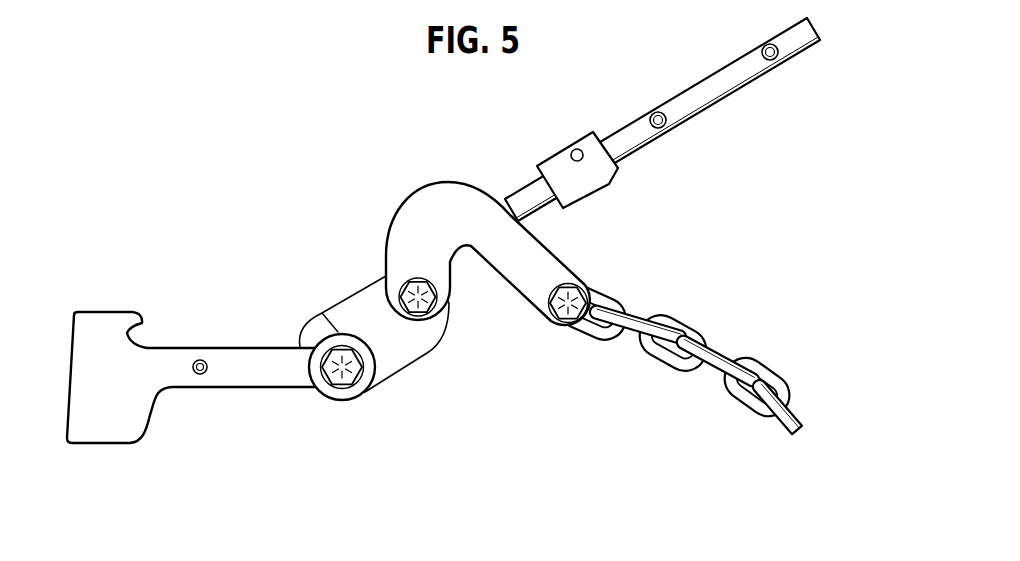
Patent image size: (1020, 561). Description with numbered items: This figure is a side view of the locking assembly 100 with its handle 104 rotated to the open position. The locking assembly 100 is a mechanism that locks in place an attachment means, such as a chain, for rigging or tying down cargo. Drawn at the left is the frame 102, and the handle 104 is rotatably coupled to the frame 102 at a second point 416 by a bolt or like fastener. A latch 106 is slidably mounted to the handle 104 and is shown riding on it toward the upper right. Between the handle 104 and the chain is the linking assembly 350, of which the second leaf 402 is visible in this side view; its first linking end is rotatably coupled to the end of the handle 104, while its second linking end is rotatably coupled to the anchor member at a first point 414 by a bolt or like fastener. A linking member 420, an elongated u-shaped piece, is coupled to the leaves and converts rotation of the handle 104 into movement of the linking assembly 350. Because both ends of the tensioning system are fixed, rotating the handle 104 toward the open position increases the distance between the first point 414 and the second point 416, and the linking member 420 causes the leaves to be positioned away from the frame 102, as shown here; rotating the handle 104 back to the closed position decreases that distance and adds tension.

The locking assembly 100 is at (195, 125).
The frame 102 is at (93, 445).
The handle 104 is at (819, 45).
The latch 106 is at (607, 192).
The linking assembly 350 is at (478, 173).
The second leaf 402 is at (405, 204).
The first point 414 is at (553, 323).
The second point 416 is at (347, 375).
The linking member 420 is at (340, 303).